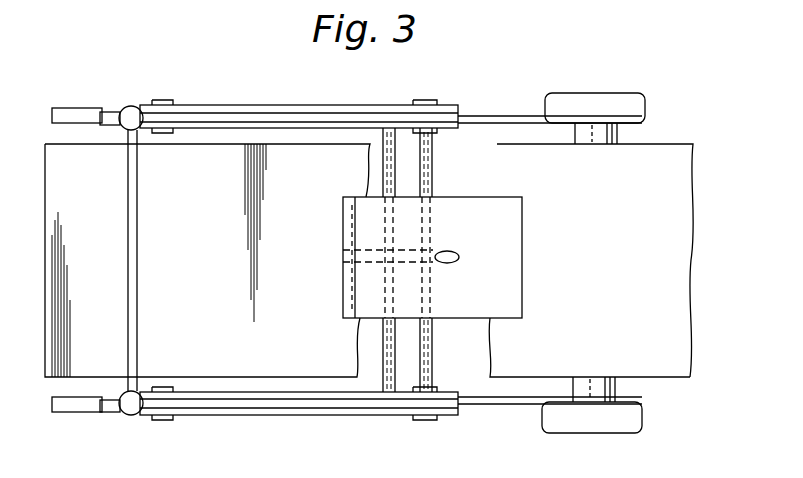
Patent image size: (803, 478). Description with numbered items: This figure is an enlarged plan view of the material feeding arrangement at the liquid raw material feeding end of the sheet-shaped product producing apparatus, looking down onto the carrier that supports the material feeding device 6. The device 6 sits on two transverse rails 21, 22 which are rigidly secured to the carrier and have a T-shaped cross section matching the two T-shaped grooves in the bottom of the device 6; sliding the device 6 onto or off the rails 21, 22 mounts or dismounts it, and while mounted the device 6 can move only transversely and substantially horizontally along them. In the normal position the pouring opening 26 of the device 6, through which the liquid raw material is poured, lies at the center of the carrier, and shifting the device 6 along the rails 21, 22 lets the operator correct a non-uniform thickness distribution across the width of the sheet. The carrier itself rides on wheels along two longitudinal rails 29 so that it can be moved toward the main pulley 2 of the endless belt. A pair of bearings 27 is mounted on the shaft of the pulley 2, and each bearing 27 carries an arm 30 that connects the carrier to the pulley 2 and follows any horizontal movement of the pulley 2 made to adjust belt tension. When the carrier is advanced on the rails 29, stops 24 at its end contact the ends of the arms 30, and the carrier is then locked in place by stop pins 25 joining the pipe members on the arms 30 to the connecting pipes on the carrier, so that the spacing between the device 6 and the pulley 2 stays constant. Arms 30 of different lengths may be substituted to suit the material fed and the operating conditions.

The main pulley 2 is at (647, 157).
The material feeding device 6 is at (523, 242).
The transverse rail 21 is at (383, 150).
The transverse rail 22 is at (427, 173).
The stop 24 is at (110, 114).
The stop pin 25 is at (135, 109).
The pouring opening 26 is at (459, 256).
The bearing 27 is at (627, 101).
The rail 29 is at (73, 114).
The arm 30 is at (497, 114).